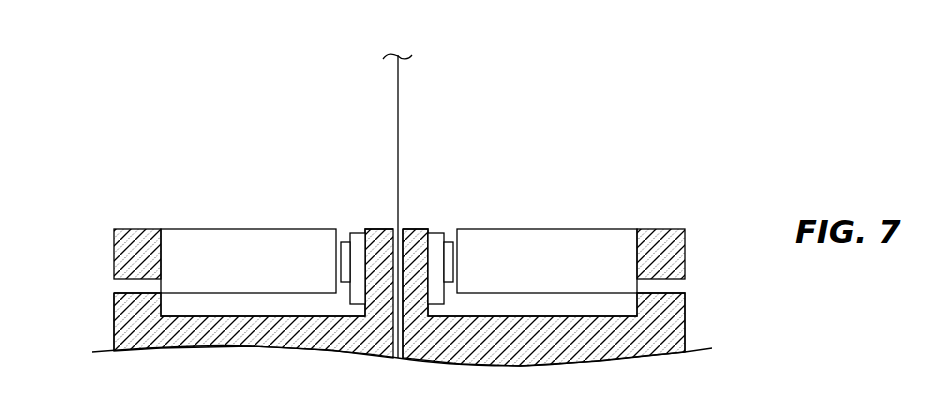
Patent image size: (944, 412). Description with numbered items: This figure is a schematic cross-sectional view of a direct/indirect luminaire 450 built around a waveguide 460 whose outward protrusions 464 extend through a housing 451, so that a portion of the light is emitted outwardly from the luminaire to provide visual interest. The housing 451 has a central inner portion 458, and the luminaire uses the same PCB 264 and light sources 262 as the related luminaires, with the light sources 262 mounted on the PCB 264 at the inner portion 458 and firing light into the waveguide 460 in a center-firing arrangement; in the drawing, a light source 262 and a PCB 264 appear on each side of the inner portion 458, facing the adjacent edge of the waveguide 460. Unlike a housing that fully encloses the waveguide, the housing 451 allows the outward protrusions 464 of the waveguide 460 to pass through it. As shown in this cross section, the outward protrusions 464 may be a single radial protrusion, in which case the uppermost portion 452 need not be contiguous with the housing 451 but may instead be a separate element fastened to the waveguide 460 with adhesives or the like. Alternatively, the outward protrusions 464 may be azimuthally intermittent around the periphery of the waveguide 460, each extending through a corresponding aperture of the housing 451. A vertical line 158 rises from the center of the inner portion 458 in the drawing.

The divider panel 158 is at (397, 98).
The direct/indirect luminaire 450 is at (385, 198).
The housing 451 is at (117, 320).
The uppermost portion 452 is at (145, 220).
The inner portion 458 is at (416, 220).
The waveguide 460 is at (253, 243).
The light sources 262 is at (343, 240).
The PCB 264 is at (356, 245).
The outward protrusions 464 is at (132, 271).